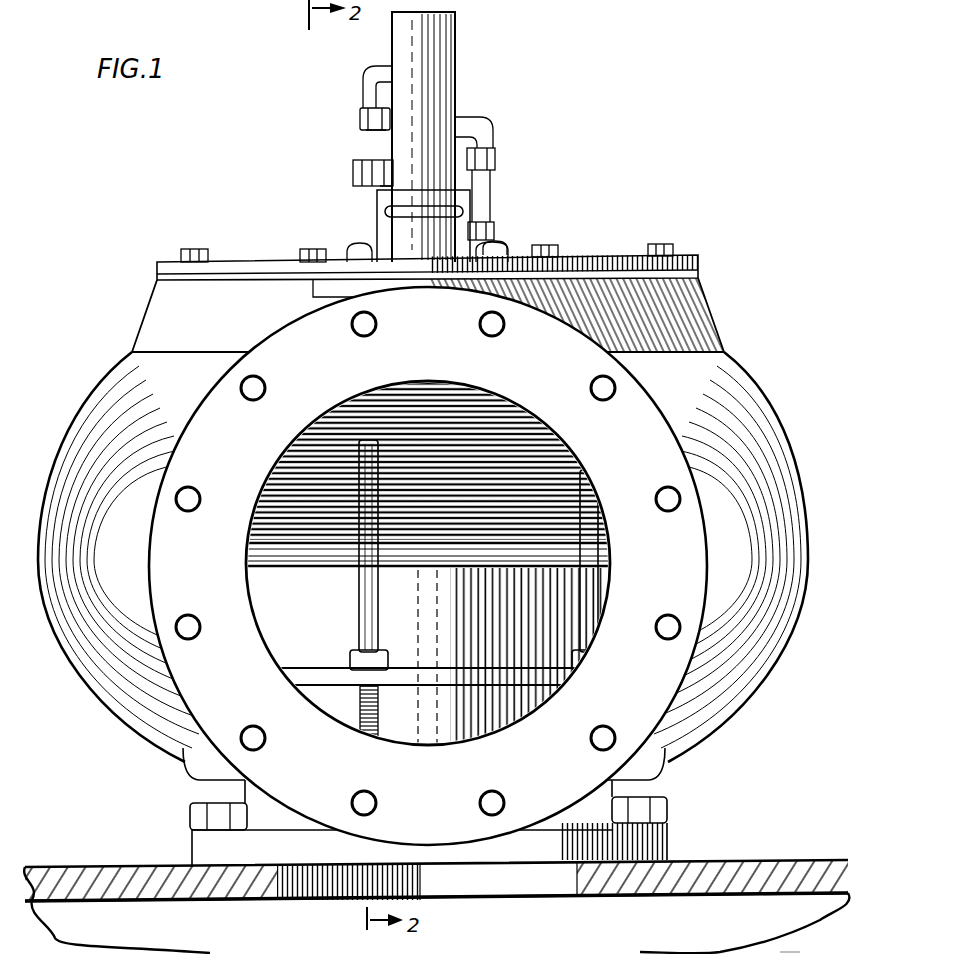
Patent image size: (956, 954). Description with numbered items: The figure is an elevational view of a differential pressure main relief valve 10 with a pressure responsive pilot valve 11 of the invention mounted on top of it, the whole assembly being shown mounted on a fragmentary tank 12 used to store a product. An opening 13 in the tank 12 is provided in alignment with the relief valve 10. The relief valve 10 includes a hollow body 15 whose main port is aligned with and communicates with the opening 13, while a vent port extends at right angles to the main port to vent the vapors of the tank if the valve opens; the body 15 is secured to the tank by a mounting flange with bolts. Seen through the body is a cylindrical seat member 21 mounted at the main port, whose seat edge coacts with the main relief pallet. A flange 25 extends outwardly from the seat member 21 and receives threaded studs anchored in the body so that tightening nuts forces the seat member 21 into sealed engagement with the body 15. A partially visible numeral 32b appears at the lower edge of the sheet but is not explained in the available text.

The main relief valve 10 is at (687, 249).
The pressure responsive pilot valve 11 is at (458, 80).
The tank 12 is at (758, 858).
The opening 13 is at (558, 880).
The hollow body 15 is at (777, 405).
The cylindrical seat member 21 is at (428, 629).
The flange 25 is at (311, 682).
The mounting surface 32b is at (805, 948).